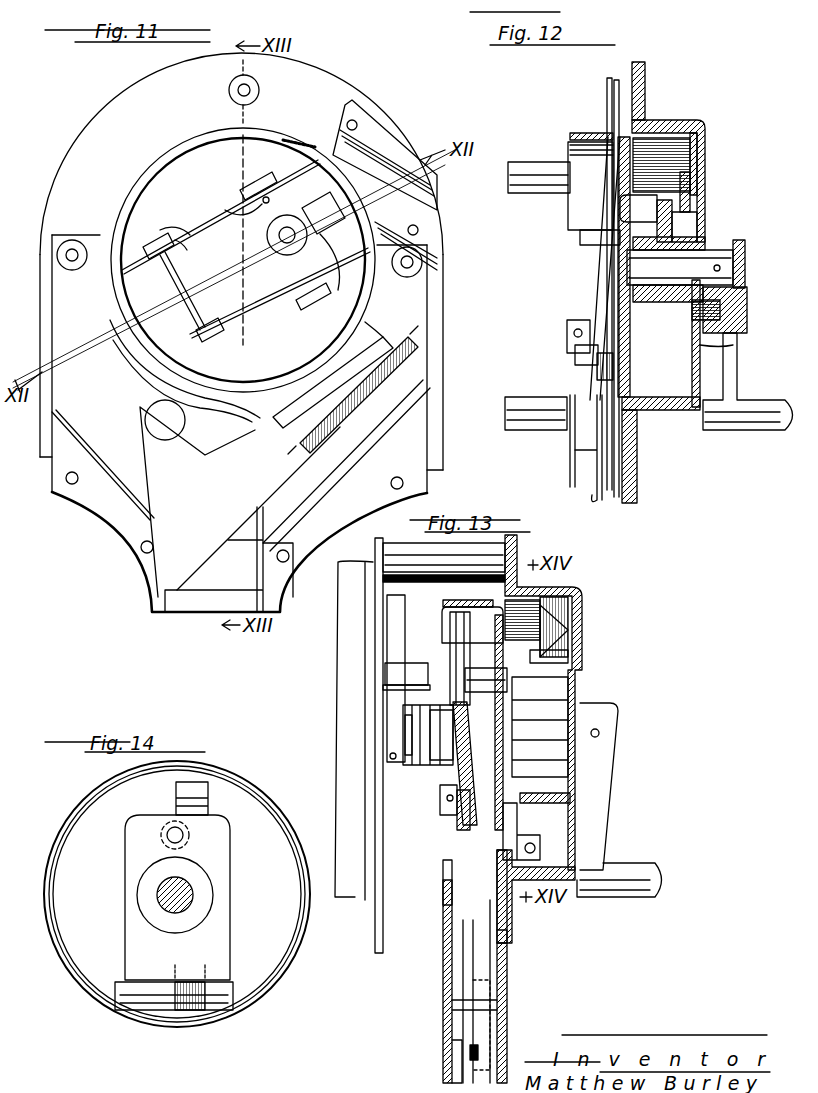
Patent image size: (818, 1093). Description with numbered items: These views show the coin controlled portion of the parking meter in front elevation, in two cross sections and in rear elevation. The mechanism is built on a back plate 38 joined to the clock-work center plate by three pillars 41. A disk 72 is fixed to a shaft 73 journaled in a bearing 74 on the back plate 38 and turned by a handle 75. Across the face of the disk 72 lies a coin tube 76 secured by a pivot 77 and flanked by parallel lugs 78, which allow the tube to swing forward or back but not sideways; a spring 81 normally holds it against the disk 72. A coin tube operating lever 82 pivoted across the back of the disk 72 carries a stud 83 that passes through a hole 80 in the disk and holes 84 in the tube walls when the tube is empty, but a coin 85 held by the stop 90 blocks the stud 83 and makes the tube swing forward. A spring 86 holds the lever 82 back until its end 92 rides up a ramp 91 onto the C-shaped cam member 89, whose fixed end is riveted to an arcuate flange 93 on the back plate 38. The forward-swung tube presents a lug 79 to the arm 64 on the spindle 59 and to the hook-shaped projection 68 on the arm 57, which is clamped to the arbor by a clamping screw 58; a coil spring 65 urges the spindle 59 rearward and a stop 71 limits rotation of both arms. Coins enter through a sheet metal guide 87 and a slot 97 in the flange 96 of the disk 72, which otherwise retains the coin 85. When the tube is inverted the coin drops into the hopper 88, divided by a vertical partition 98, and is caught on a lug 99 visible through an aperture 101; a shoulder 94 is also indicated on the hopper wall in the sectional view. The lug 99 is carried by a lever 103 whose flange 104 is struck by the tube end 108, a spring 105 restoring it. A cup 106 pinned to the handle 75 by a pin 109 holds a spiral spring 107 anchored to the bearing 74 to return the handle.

In FIG. 12, the back plate 38 is at (640, 482).
In FIG. 11, the pillars 41 is at (250, 85).
In FIG. 12, the pillars 41 is at (560, 185).
In FIG. 13, the pillars 41 is at (420, 548).
In FIG. 13, the arm 57 is at (380, 600).
In FIG. 13, the clamping screw 58 is at (392, 757).
In FIG. 13, the spindle 59 is at (445, 764).
In FIG. 13, the arm 64 is at (420, 655).
In FIG. 13, the coil spring 65 is at (415, 762).
In FIG. 13, the hook-shaped projection 68 is at (392, 605).
In FIG. 13, the stop 71 is at (395, 688).
In FIG. 11, the disk 72 is at (152, 188).
In FIG. 12, the disk 72 is at (620, 258).
In FIG. 13, the disk 72 is at (565, 598).
In FIG. 14, the disk 72 is at (68, 882).
In FIG. 12, the shaft 73 is at (700, 262).
In FIG. 13, the shaft 73 is at (505, 730).
In FIG. 14, the shaft 73 is at (185, 902).
In FIG. 12, the bearing 74 is at (694, 225).
In FIG. 12, the handle 75 is at (725, 356).
In FIG. 13, the handle 75 is at (625, 878).
In FIG. 11, the coin tube 76 is at (246, 249).
In FIG. 12, the coin tube 76 is at (595, 300).
In FIG. 13, the coin tube 76 is at (455, 820).
In FIG. 11, the pivot 77 is at (177, 279).
In FIG. 12, the pivot 77 is at (572, 345).
In FIG. 13, the pivot 77 is at (446, 800).
In FIG. 11, the lugs 78 is at (270, 178).
In FIG. 12, the lugs 78 is at (600, 240).
In FIG. 11, the lug 79 is at (337, 278).
In FIG. 12, the lug 79 is at (580, 205).
In FIG. 13, the lug 79 is at (460, 640).
In FIG. 12, the hole 80 is at (640, 195).
In FIG. 13, the spring 81 is at (470, 850).
In FIG. 12, the coin tube operating lever 82 is at (640, 320).
In FIG. 13, the coin tube operating lever 82 is at (520, 820).
In FIG. 14, the coin tube operating lever 82 is at (210, 940).
In FIG. 11, the stud 83 is at (283, 243).
In FIG. 12, the stud 83 is at (697, 140).
In FIG. 13, the stud 83 is at (570, 622).
In FIG. 14, the stud 83 is at (165, 830).
In FIG. 11, the holes 84 is at (289, 216).
In FIG. 13, the holes 84 is at (450, 683).
In FIG. 13, the coin 85 is at (448, 615).
In FIG. 14, the spring 86 is at (192, 1012).
In FIG. 11, the sheet metal guide 87 is at (380, 150).
In FIG. 12, the sheet metal guide 87 is at (612, 88).
In FIG. 11, the coin hopper 88 is at (100, 445).
In FIG. 13, the coin hopper 88 is at (462, 1000).
In FIG. 12, the cam member 89 is at (692, 352).
In FIG. 13, the cam member 89 is at (575, 790).
In FIG. 11, the stop 90 is at (234, 203).
In FIG. 12, the ramp 91 is at (697, 190).
In FIG. 13, the ramp 91 is at (570, 640).
In FIG. 13, the end 92 is at (570, 652).
In FIG. 14, the end 92 is at (195, 790).
In FIG. 12, the arcuate flange 93 is at (665, 412).
In FIG. 13, the arcuate flange 93 is at (545, 843).
In FIG. 13, the shoulder 94 is at (500, 940).
In FIG. 11, the flange 96 is at (312, 138).
In FIG. 12, the flange 96 is at (600, 135).
In FIG. 13, the flange 96 is at (490, 590).
In FIG. 12, the slot 97 is at (610, 130).
In FIG. 13, the slot 97 is at (503, 550).
In FIG. 12, the vertical partition 98 is at (598, 493).
In FIG. 13, the vertical partition 98 is at (460, 1032).
In FIG. 13, the lug 99 is at (472, 1058).
In FIG. 13, the aperture 101 is at (485, 1030).
In FIG. 11, the lever 103 is at (165, 492).
In FIG. 13, the lever 103 is at (455, 987).
In FIG. 11, the flange 104 is at (380, 330).
In FIG. 11, the spring 105 is at (395, 376).
In FIG. 12, the cup 106 is at (740, 297).
In FIG. 13, the cup 106 is at (560, 718).
In FIG. 12, the spiral spring 107 is at (725, 372).
In FIG. 11, the end 108 is at (118, 315).
In FIG. 12, the end 108 is at (590, 388).
In FIG. 13, the end 108 is at (450, 868).
In FIG. 12, the pin 109 is at (722, 318).